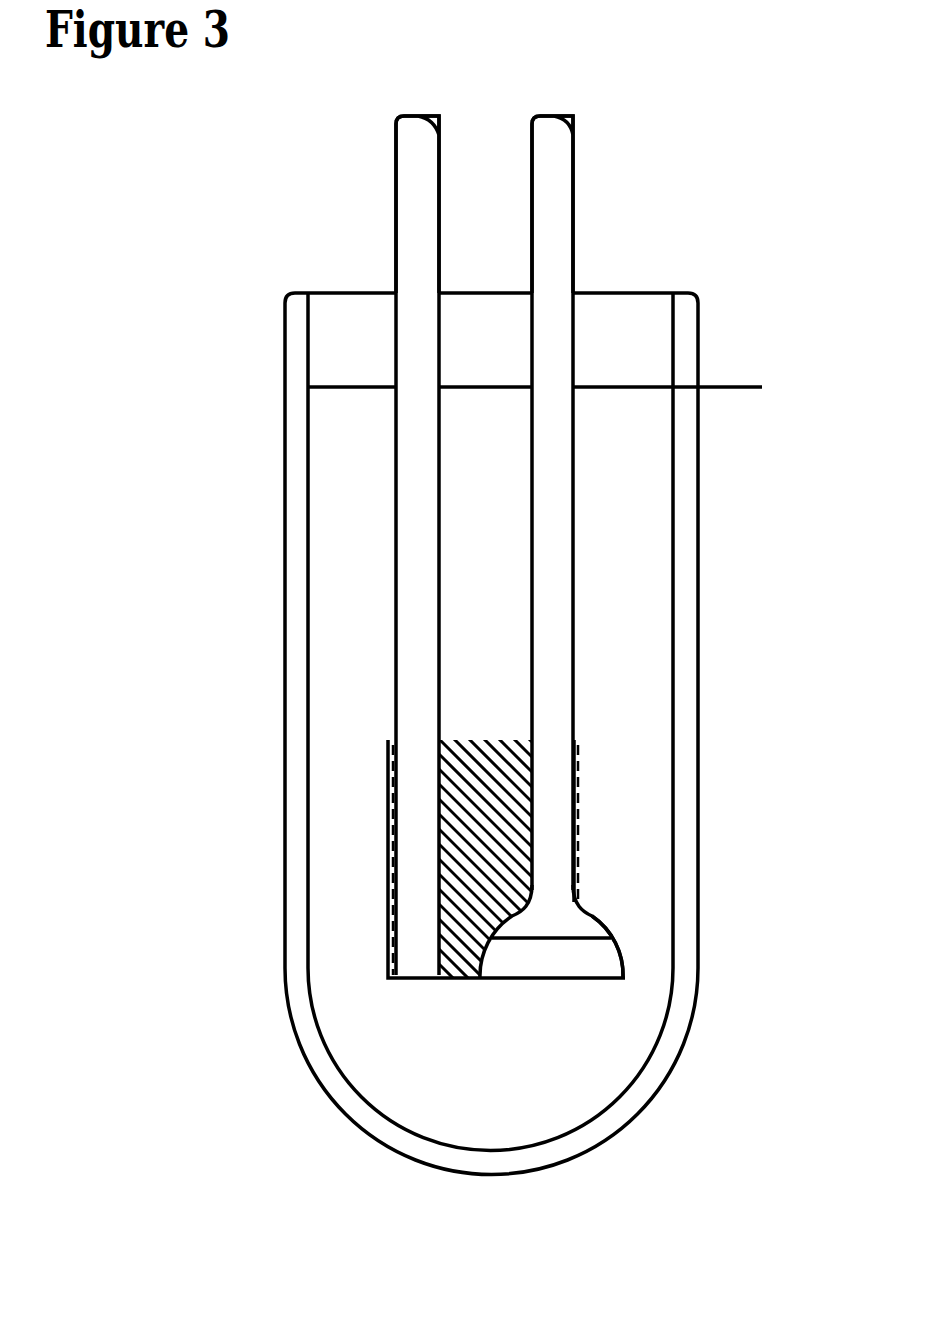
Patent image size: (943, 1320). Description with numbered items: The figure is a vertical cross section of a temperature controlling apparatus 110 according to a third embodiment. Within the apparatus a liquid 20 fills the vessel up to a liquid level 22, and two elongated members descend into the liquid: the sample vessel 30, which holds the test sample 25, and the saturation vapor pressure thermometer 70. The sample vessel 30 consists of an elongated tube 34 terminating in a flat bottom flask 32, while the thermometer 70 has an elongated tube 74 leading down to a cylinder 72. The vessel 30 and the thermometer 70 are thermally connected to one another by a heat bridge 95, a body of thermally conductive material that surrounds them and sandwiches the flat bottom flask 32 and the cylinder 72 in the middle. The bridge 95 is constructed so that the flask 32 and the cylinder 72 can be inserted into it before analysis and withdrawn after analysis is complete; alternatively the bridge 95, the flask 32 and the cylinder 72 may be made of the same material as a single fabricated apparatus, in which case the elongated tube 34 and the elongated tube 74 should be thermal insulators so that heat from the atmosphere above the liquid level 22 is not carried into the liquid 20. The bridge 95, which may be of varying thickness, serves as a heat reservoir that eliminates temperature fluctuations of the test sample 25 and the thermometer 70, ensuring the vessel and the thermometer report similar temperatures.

The liquid 20 is at (350, 613).
The liquid level 22 is at (563, 387).
The test sample 25 is at (550, 948).
The sample vessel 30 is at (548, 244).
The flat bottom flask 32 is at (605, 911).
The elongated tube 34 is at (573, 612).
The saturation vapor pressure thermometer 70 is at (396, 428).
The cylinder 72 is at (388, 870).
The elongated tube 74 is at (415, 245).
The heat bridge 95 is at (487, 797).
The temperature controlling apparatus 110 is at (285, 687).